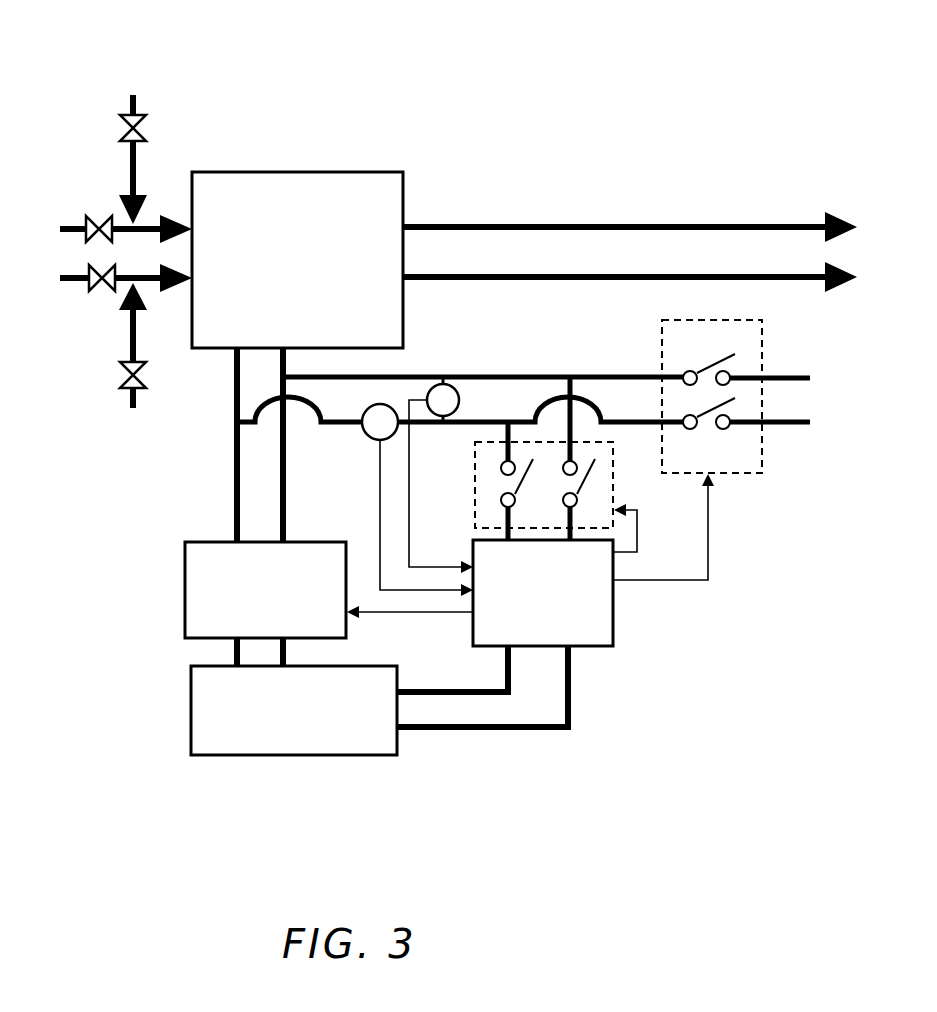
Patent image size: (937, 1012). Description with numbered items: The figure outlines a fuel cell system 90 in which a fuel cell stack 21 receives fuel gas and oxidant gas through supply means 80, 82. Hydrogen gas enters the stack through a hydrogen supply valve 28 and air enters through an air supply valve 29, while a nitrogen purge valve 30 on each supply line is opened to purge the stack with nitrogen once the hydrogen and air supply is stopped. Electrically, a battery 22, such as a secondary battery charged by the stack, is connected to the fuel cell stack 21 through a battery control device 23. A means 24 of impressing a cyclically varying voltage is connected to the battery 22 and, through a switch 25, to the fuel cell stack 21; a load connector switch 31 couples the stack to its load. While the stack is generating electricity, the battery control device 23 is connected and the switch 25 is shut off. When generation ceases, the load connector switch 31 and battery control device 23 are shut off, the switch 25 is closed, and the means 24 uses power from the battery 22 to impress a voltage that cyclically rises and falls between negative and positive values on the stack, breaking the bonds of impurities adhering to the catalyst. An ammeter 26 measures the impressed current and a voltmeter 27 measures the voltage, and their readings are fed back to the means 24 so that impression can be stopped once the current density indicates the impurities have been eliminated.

The fuel cell stack 21 is at (284, 170).
The battery 22 is at (280, 765).
The battery control device 23 is at (183, 588).
The means of impressing a cyclically varying voltage 24 is at (602, 659).
The switch for impressing voltage 25 is at (618, 474).
The ammeter 26 is at (391, 399).
The voltmeter 27 is at (472, 394).
The hydrogen supply valve 28 is at (91, 212).
The air supply valve 29 is at (99, 298).
The nitrogen purge valve 30 is at (150, 127).
The load connector switch 31 is at (750, 479).
The means of supplying fuel gas 80 is at (152, 222).
The means of supplying oxidant gas 82 is at (152, 286).
The fuel cell system 90 is at (722, 152).